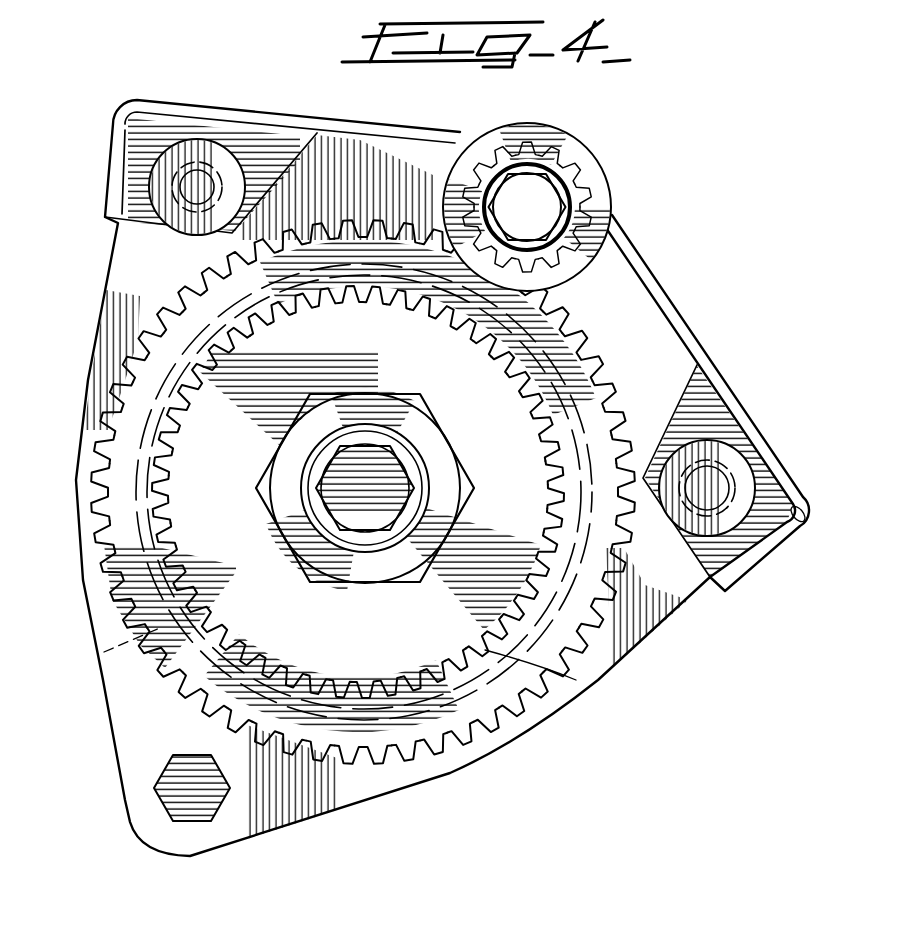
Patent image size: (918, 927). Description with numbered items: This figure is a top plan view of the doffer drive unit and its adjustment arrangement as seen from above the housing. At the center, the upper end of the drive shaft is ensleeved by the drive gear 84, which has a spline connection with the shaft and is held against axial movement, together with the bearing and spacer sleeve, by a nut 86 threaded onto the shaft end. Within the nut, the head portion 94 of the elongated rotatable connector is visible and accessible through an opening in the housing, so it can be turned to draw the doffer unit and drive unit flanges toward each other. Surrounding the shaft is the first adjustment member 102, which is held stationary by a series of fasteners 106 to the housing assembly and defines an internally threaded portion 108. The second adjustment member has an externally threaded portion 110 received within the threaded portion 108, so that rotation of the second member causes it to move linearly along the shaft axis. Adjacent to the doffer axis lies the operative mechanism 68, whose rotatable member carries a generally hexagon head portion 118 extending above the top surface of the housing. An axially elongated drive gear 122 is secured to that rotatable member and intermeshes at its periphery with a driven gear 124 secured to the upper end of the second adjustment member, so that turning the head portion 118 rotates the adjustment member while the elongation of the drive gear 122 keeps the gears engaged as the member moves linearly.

The operative mechanism 68 is at (440, 180).
The drive gear 84 is at (576, 680).
The nut 86 is at (442, 463).
The head portion 94 is at (342, 505).
The first adjustment member 102 is at (127, 265).
The fasteners 106 is at (157, 199).
The internally threaded portion 108 is at (105, 440).
The externally threaded portion 110 is at (104, 652).
The hexagon head portion 118 is at (556, 228).
The drive gear 122 is at (582, 175).
The driven gear 124 is at (118, 548).